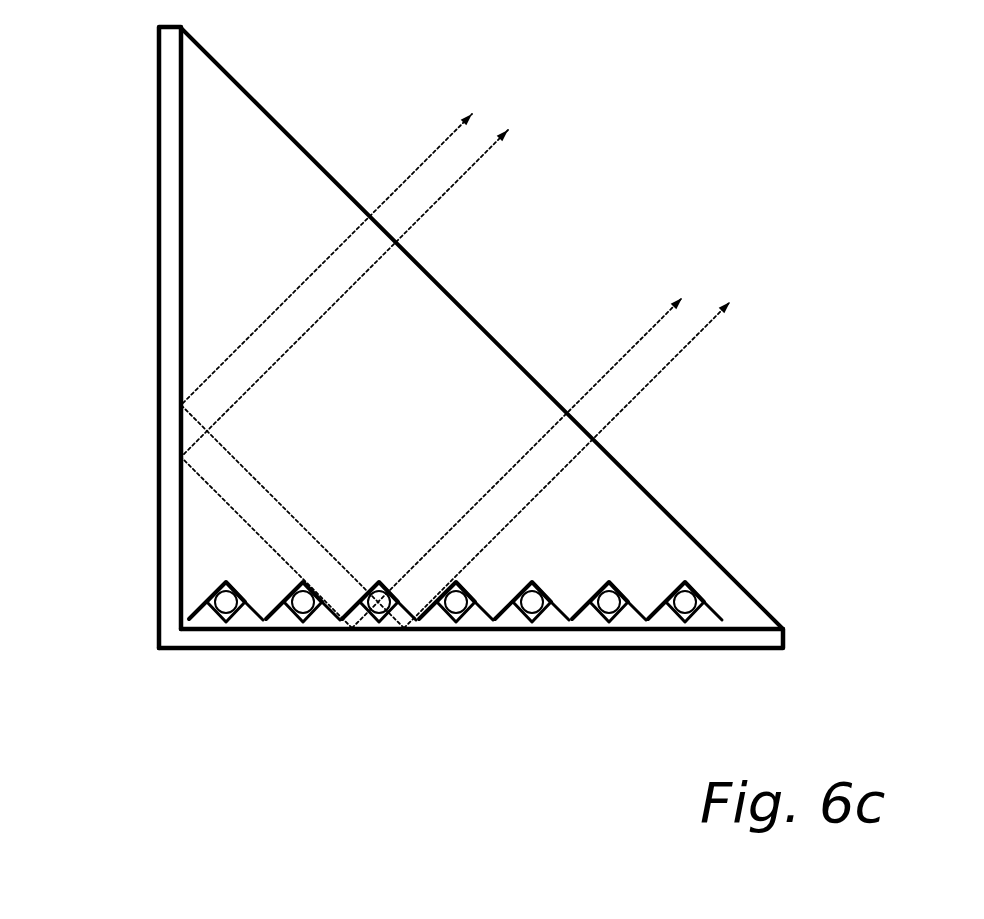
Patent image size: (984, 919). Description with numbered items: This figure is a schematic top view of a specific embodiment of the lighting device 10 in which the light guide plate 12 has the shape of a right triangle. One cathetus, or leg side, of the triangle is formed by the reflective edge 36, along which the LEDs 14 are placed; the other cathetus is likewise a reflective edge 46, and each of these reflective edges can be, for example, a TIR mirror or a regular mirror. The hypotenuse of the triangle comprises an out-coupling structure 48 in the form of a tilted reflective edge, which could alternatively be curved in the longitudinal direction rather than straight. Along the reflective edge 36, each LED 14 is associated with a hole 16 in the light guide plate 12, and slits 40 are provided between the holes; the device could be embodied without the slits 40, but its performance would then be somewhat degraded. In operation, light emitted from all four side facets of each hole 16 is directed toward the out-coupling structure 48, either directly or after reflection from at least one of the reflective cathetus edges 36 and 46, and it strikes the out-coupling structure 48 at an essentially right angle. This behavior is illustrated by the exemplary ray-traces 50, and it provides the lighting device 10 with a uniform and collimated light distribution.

The lighting assembly 10 is at (445, 379).
The light guide plate 12 is at (688, 558).
The LEDs 14 is at (609, 598).
The hole 16 is at (627, 600).
The reflective edge 36 is at (448, 638).
The slits 40 is at (552, 603).
The reflective edge 46 is at (158, 436).
The out-coupling structure 48 is at (489, 336).
The ray-traces 50 is at (410, 173).